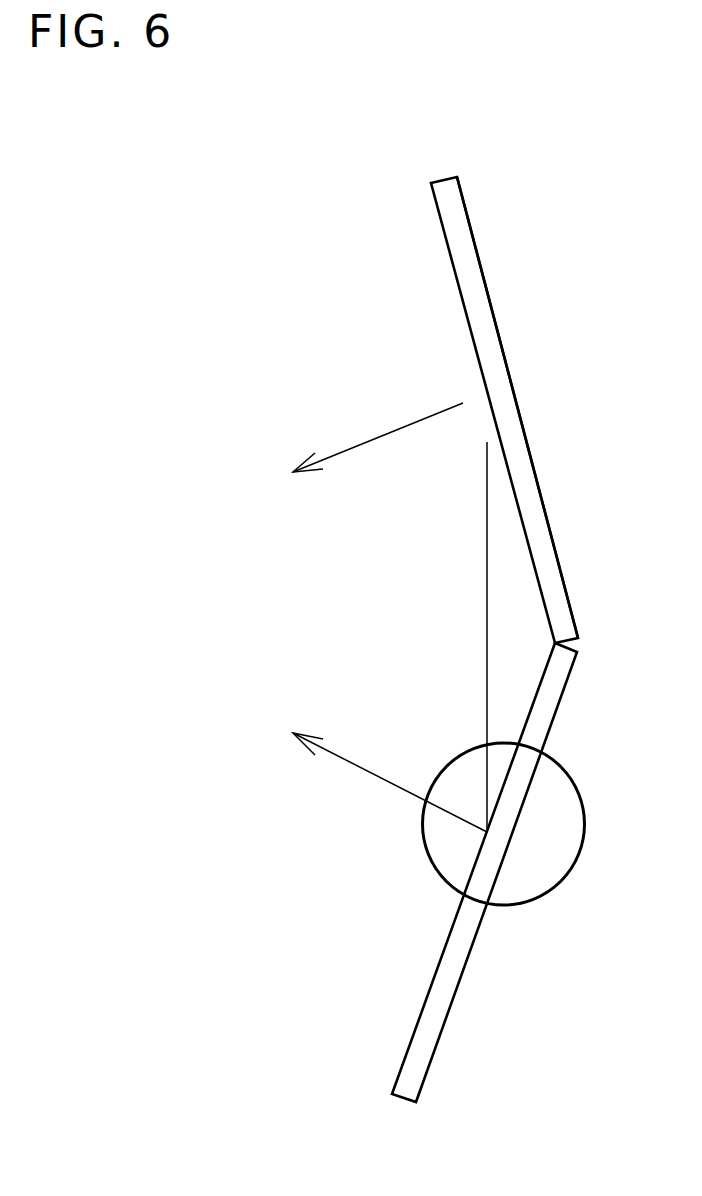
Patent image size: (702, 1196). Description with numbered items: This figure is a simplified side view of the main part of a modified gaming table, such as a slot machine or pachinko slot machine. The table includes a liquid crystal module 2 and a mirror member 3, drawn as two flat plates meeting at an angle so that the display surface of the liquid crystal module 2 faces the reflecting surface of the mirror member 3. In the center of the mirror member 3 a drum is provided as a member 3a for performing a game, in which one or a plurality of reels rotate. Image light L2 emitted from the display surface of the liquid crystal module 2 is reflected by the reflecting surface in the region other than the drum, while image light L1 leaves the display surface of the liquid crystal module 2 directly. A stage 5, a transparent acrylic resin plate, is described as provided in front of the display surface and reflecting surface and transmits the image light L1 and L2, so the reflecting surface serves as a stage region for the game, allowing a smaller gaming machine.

The stage 5 is at (398, 196).
The liquid crystal module 2 is at (508, 407).
The mirror member 3 is at (482, 920).
The member for performing a game 3a is at (462, 750).
The image light L1 is at (427, 418).
The image light L2 is at (377, 770).